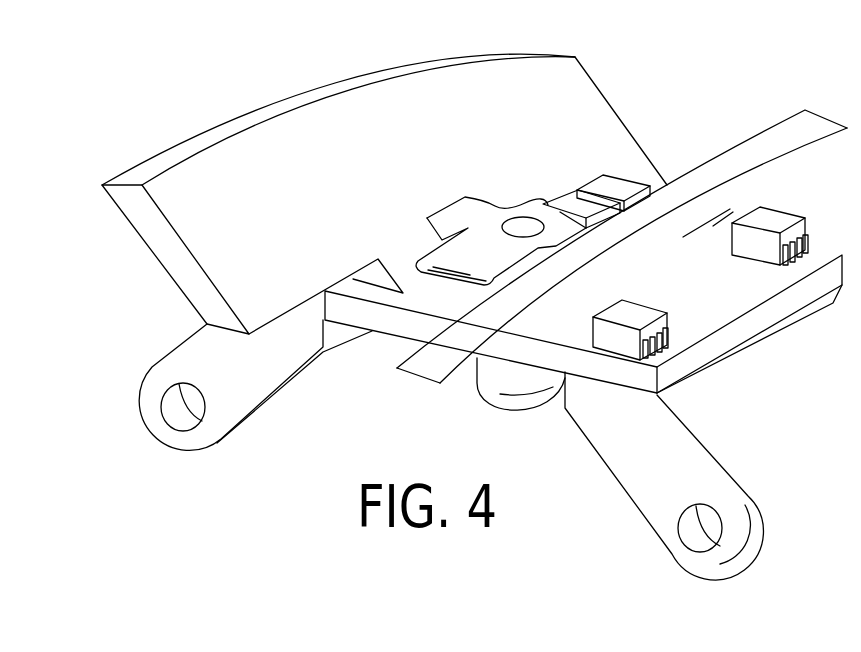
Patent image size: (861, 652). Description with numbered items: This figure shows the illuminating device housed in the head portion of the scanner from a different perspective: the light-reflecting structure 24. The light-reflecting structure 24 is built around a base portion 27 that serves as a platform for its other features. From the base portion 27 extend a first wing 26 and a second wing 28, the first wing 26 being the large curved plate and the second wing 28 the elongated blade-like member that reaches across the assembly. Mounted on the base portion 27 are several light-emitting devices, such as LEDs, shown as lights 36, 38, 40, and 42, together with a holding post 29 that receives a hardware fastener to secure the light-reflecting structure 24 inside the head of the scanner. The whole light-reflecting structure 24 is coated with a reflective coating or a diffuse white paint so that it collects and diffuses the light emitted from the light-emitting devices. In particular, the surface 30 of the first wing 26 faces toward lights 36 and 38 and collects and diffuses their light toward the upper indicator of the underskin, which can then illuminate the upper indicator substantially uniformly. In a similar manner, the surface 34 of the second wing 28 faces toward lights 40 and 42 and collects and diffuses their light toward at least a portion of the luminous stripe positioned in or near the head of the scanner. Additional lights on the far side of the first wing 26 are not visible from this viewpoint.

The light-reflecting structure 24 is at (474, 316).
The first wing 26 is at (333, 90).
The base portion 27 is at (747, 300).
The second wing 28 is at (622, 227).
The holding post 29 is at (482, 206).
The surface 30 is at (372, 168).
The surface 34 is at (777, 171).
The light-emitting device 36 is at (610, 181).
The light-emitting device 38 is at (573, 204).
The light-emitting device 40 is at (757, 250).
The light-emitting device 42 is at (633, 308).